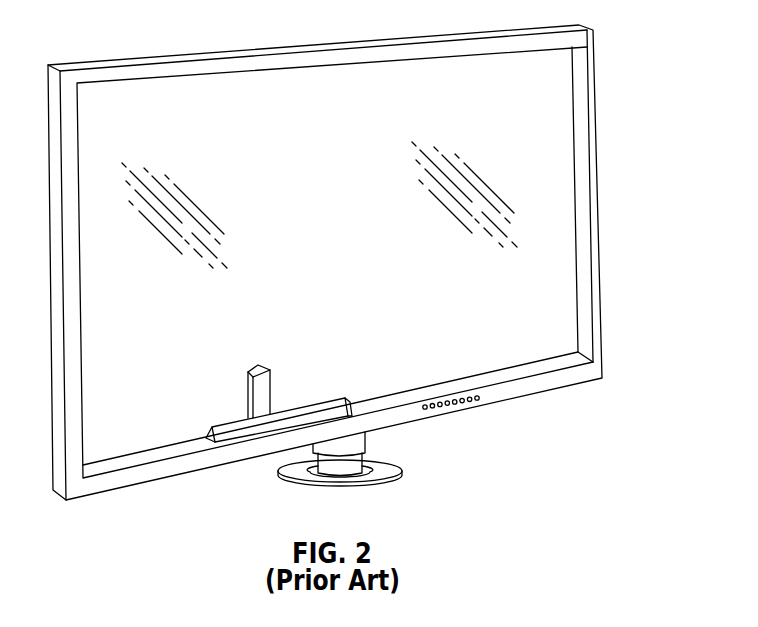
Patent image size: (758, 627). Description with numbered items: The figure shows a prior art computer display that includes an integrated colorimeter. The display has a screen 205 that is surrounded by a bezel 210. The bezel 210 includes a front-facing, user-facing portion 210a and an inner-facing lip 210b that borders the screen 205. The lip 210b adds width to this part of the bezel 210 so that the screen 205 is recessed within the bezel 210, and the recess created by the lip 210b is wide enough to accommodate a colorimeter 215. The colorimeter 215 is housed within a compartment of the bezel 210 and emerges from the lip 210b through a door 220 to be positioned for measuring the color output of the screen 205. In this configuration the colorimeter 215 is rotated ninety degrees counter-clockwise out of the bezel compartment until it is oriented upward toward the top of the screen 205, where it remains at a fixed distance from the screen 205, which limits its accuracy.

The screen 205 is at (355, 270).
The bezel 210 is at (577, 373).
The front-facing portion 210a is at (489, 398).
The inner-facing lip 210b is at (586, 206).
The colorimeter 215 is at (248, 386).
The door 220 is at (337, 398).